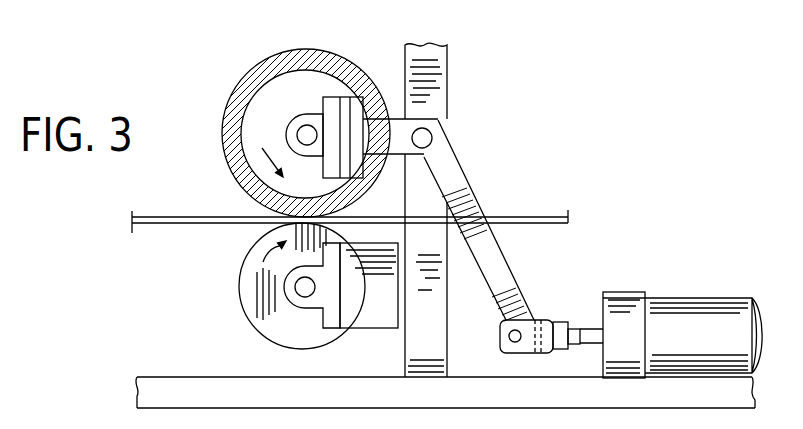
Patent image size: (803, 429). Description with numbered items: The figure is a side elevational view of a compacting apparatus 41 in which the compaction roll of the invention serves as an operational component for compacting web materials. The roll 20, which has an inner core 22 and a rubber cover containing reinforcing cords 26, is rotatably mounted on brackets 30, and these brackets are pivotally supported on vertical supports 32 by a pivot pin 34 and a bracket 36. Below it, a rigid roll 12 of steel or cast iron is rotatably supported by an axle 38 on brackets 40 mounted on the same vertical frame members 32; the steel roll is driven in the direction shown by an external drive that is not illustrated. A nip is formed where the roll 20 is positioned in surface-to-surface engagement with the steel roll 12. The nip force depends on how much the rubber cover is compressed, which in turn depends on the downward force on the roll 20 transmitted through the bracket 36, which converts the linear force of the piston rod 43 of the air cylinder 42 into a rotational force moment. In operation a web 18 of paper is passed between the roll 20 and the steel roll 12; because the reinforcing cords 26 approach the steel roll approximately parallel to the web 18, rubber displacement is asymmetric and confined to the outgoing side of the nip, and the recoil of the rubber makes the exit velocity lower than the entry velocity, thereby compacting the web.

The rigid roll 12 is at (245, 335).
The web 18 is at (141, 226).
The roll 20 is at (234, 65).
The inner core 22 is at (245, 143).
The reinforcing cords 26 is at (230, 114).
The brackets 30 is at (323, 125).
The vertical supports 32 is at (433, 88).
The pivot pin 34 is at (434, 130).
The bracket 36 is at (500, 272).
The axle 38 is at (295, 288).
The brackets 40 is at (376, 303).
The compacting apparatus 41 is at (499, 161).
The air cylinder 42 is at (695, 323).
The piston rod 43 is at (583, 330).